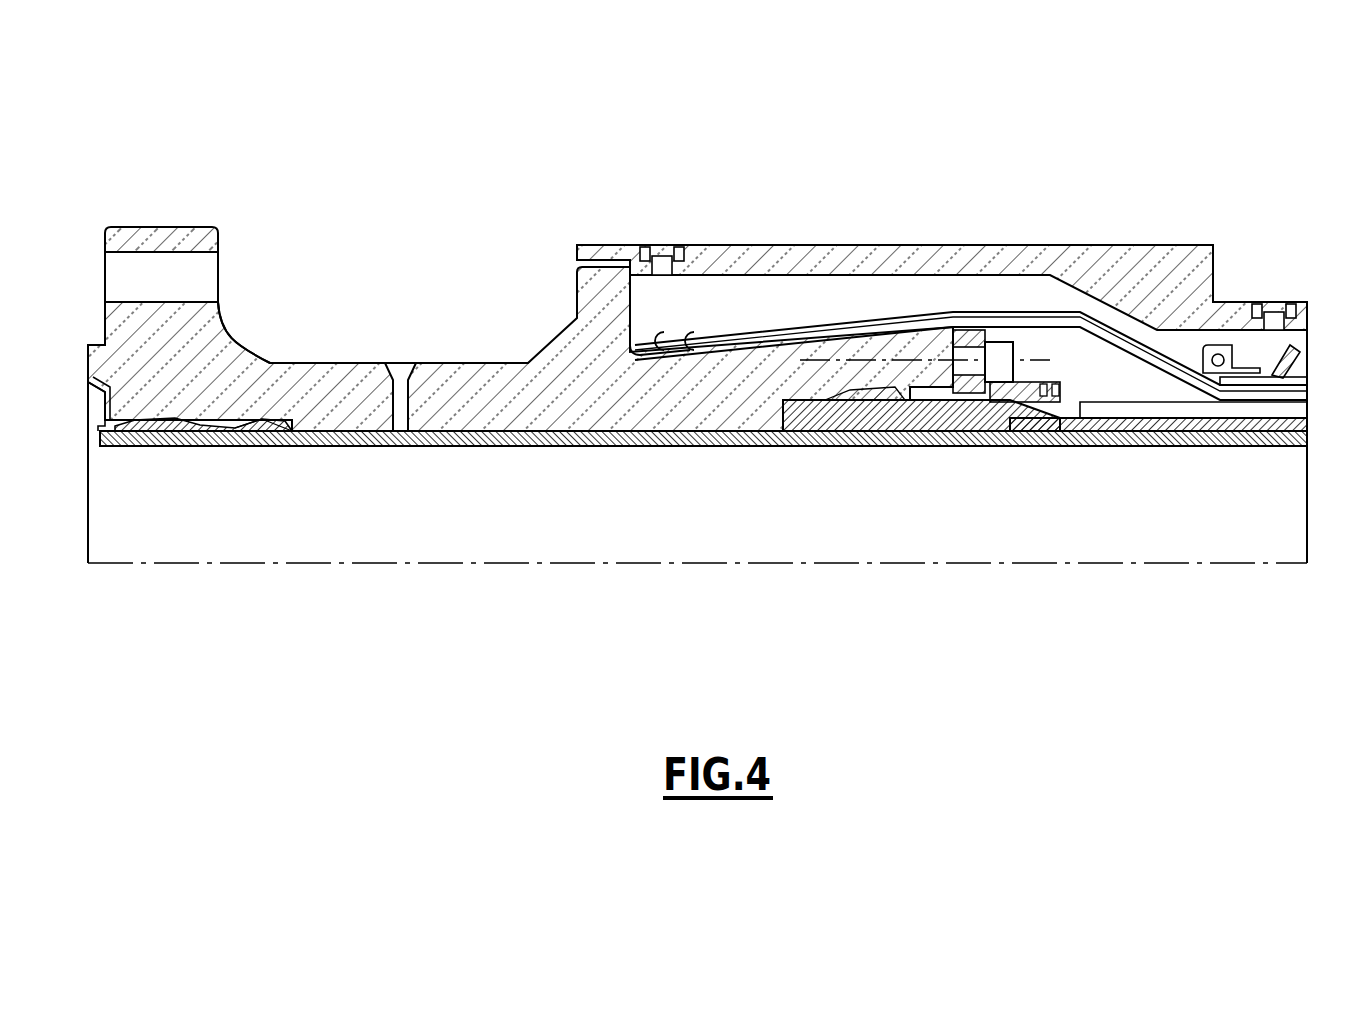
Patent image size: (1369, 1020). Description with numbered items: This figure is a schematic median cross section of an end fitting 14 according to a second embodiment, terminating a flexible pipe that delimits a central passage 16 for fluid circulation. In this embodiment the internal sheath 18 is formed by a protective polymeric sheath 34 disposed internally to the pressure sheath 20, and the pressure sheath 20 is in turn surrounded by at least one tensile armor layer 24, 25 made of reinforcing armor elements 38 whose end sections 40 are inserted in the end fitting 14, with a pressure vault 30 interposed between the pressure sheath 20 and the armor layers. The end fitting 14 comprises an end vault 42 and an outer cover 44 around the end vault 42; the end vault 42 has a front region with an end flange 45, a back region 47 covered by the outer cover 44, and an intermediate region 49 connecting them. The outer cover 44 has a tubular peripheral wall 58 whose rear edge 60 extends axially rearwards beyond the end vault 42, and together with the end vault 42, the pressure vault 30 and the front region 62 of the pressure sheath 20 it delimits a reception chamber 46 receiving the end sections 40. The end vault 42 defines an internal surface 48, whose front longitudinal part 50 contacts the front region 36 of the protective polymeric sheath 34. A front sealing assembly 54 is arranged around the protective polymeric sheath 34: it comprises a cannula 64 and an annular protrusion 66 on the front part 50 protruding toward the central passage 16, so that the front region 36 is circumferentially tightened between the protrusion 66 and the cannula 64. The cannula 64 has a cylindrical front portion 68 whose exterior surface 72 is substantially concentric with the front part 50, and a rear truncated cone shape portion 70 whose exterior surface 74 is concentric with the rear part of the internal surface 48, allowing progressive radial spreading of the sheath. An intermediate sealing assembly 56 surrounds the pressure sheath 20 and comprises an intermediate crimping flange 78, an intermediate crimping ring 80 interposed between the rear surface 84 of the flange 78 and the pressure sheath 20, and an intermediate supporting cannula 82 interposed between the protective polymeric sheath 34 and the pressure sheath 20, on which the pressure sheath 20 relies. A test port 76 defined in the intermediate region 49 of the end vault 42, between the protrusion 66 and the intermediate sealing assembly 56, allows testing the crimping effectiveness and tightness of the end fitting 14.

The end fitting 14 is at (757, 150).
The central passage 16 is at (1218, 562).
The internal sheath 18 is at (418, 447).
The pressure sheath 20 is at (1275, 447).
The tensile armor layer 24 is at (1305, 394).
The tensile armor layer 25 is at (1305, 380).
The pressure vault 30 is at (1290, 410).
The protective polymeric sheath 34 is at (522, 447).
The front region 36 is at (228, 420).
The reinforcing armor elements 38 is at (1035, 318).
The end sections 40 is at (700, 332).
The end vault 42 is at (175, 338).
The outer cover 44 is at (882, 262).
The end flange 45 is at (200, 232).
The reception chamber 46 is at (832, 300).
The back region 47 is at (799, 205).
The internal surface 48 is at (307, 462).
The intermediate region 49 is at (465, 280).
The front longitudinal part 50 is at (188, 420).
The front sealing assembly 54 is at (175, 470).
The intermediate sealing assembly 56 is at (936, 340).
The tubular peripheral wall 58 is at (1088, 262).
The rear edge 60 is at (1195, 292).
The front region of the pressure sheath 62 is at (985, 447).
The cannula 64 is at (147, 465).
The annular protrusion 66 is at (165, 375).
The cylindrical front portion 68 is at (200, 447).
The rear truncated cone shape portion 70 is at (275, 447).
The exterior surface 72 is at (100, 418).
The exterior surface 74 is at (290, 405).
The test port 76 is at (400, 400).
The intermediate crimping flange 78 is at (975, 378).
The intermediate crimping ring 80 is at (865, 447).
The intermediate supporting cannula 82 is at (900, 447).
The rear surface 84 is at (885, 393).